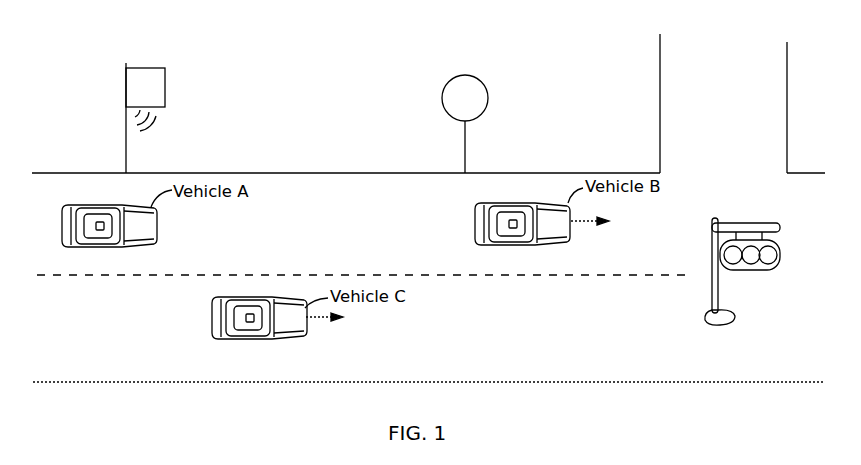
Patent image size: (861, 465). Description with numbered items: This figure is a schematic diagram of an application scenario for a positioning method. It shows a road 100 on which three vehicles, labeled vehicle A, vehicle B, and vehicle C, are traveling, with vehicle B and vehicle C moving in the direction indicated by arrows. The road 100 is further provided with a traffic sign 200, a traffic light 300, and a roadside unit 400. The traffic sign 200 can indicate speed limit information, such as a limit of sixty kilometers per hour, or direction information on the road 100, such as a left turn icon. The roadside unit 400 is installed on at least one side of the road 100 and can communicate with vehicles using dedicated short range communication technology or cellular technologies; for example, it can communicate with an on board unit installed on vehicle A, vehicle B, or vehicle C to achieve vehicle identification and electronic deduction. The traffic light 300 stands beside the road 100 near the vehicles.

The road 100 is at (338, 178).
The traffic sign 200 is at (464, 74).
The traffic light 300 is at (740, 223).
The roadside unit 400 is at (141, 67).